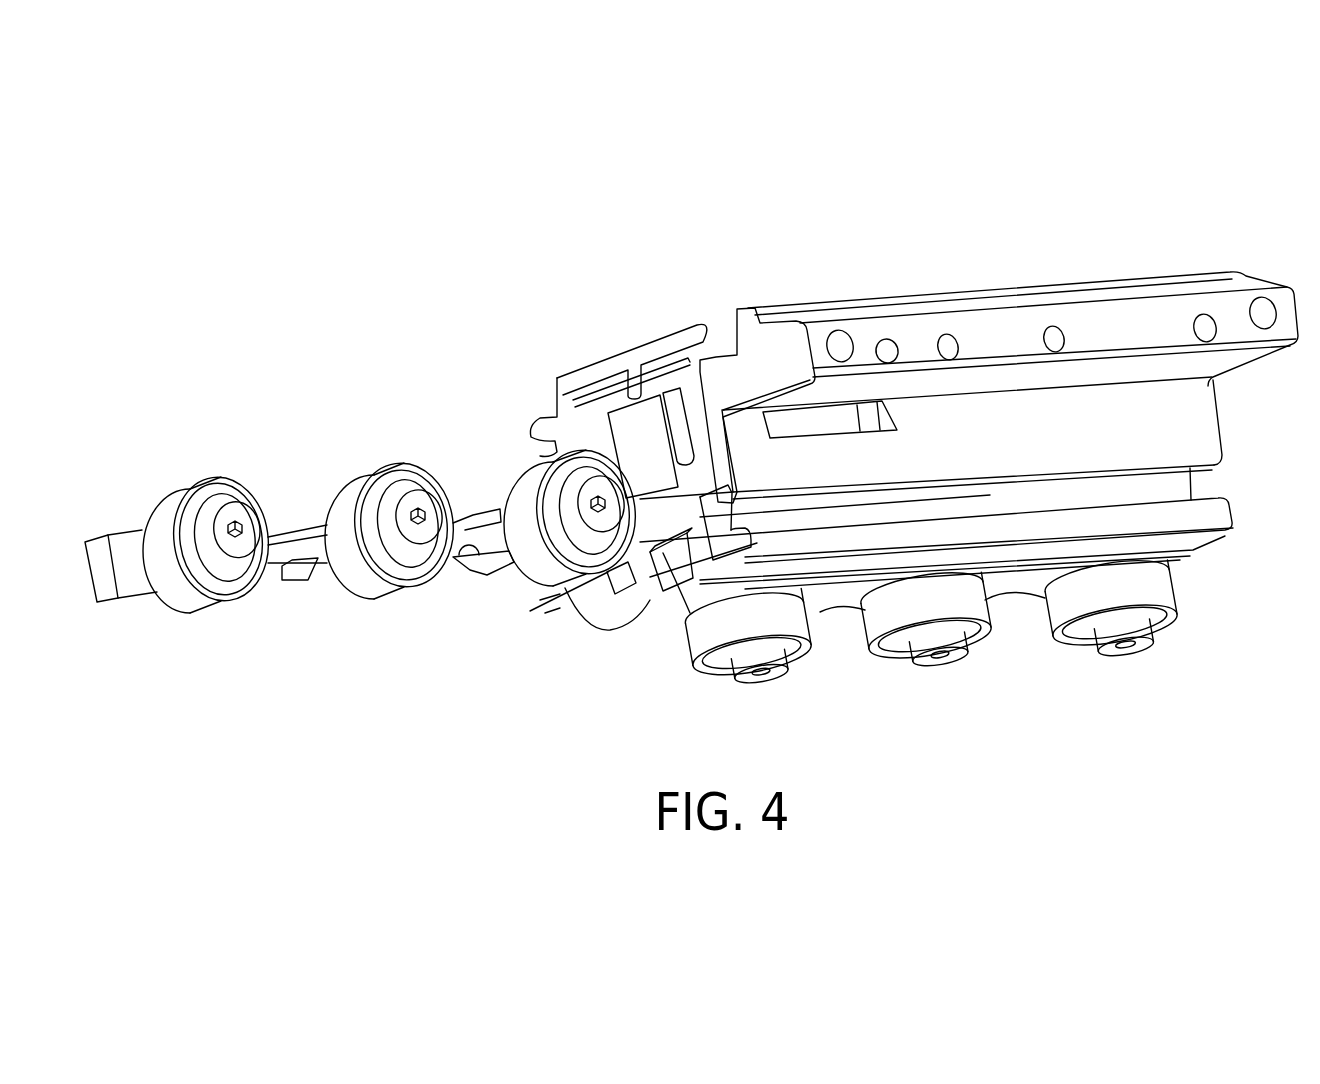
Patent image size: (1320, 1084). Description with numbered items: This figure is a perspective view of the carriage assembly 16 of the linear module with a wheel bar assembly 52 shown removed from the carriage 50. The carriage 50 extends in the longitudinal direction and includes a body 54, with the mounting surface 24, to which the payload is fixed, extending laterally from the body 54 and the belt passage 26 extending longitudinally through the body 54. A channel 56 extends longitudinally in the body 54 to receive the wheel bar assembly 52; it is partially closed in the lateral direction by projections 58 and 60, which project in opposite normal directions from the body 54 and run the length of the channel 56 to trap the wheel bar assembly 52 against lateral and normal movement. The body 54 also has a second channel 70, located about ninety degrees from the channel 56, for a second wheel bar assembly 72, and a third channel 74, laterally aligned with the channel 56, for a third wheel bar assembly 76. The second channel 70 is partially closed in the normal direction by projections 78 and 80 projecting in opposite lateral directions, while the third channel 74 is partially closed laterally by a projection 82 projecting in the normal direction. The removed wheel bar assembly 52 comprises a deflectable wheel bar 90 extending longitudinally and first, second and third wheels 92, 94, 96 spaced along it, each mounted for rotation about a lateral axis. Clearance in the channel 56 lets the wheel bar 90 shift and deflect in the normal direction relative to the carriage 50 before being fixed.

The carriage assembly 16 is at (1121, 214).
The mounting surface 24 is at (1225, 302).
The belt passage 26 is at (684, 410).
The carriage 50 is at (645, 335).
The wheel bar assembly 52 is at (289, 612).
The body 54 is at (580, 366).
The channel 56 is at (1178, 490).
The projection 58 is at (748, 537).
The projection 60 is at (690, 583).
The second channel 70 is at (620, 597).
The second wheel bar assembly 72 is at (704, 672).
The third channel 74 is at (590, 607).
The third wheel bar assembly 76 is at (549, 610).
The projection 78 is at (718, 496).
The projection 80 is at (705, 600).
The projection 82 is at (541, 607).
The deflectable wheel bar 90 is at (283, 547).
The first wheel 92 is at (172, 492).
The second wheel 94 is at (398, 465).
The third wheel 96 is at (527, 480).